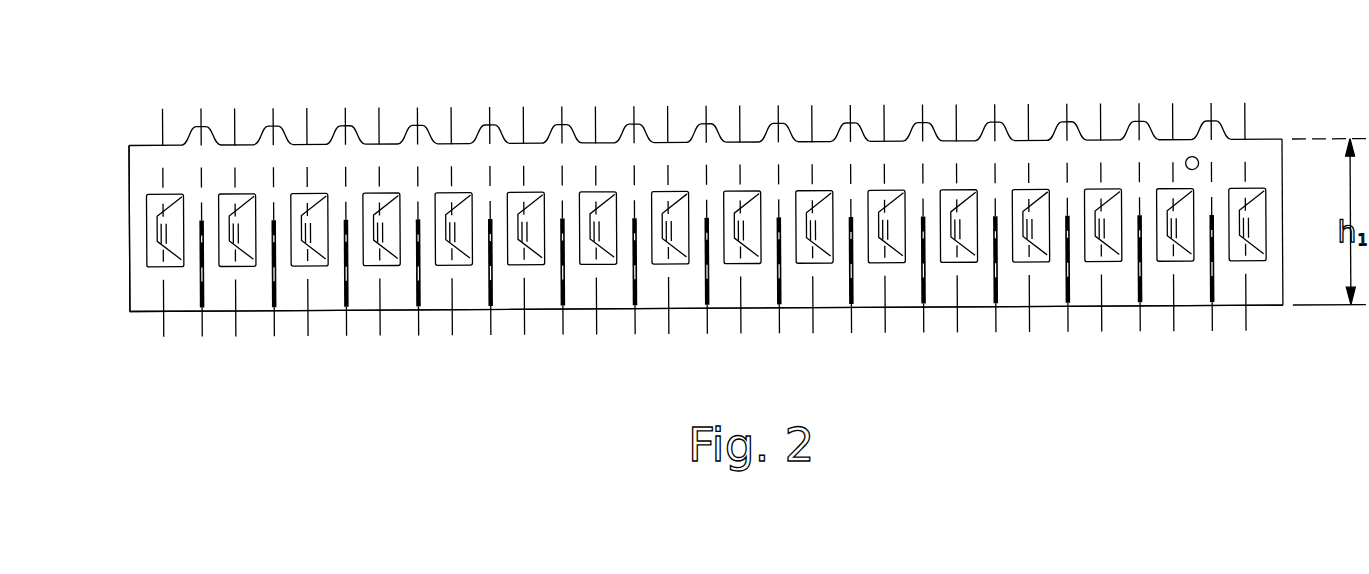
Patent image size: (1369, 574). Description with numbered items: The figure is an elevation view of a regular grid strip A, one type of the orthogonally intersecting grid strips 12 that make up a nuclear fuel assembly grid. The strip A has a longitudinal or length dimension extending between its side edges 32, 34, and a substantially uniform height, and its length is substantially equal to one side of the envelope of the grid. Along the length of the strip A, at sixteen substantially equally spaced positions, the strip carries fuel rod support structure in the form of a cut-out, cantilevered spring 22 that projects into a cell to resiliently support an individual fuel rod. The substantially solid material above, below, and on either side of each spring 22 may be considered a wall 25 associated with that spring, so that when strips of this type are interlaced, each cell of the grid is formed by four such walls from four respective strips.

The grid strip 12 is at (675, 144).
The cantilevered spring 22 is at (812, 222).
The wall 25 is at (797, 313).
The side edge 32 is at (128, 240).
The side edge 34 is at (1282, 162).
The regular grid strip A is at (128, 173).